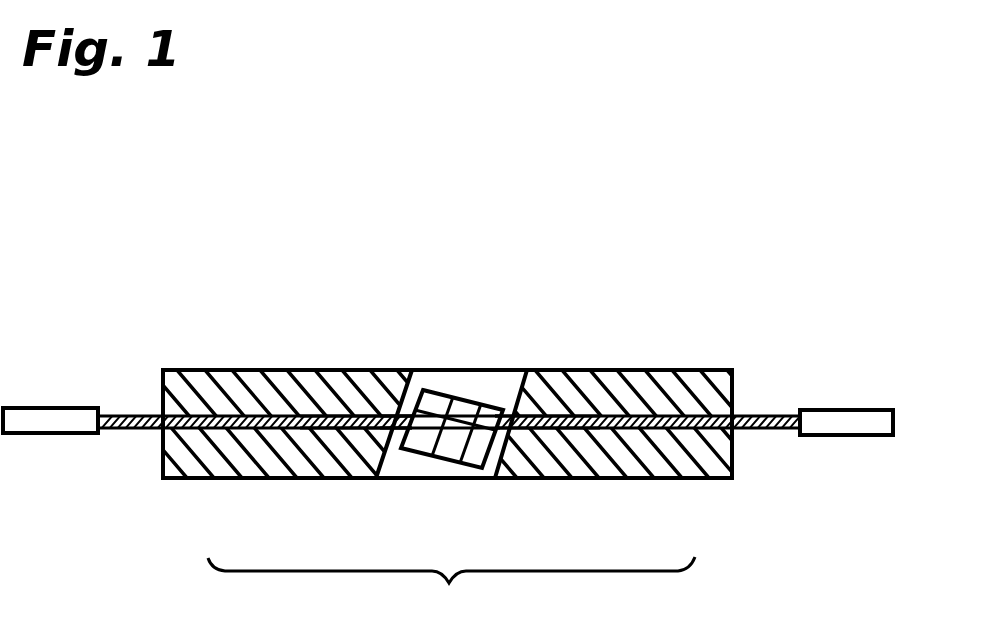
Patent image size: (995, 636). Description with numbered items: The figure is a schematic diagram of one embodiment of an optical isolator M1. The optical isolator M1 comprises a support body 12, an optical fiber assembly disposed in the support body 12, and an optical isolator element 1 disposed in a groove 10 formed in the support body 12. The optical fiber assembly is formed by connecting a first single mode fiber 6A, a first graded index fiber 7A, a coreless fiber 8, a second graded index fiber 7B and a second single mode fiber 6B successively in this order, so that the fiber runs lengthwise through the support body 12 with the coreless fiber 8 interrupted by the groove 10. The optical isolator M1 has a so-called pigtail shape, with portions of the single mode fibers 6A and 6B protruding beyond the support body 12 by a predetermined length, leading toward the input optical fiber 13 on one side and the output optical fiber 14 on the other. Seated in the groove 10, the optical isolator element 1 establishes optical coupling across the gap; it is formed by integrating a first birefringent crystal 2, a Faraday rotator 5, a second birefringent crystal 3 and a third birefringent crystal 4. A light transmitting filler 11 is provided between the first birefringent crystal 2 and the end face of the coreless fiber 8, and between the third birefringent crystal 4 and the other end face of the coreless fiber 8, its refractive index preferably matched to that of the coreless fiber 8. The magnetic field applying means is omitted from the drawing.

The optical isolator M1 is at (685, 272).
The optical isolator element 1 is at (473, 341).
The first birefringent crystal 2 is at (440, 380).
The second birefringent crystal 3 is at (475, 400).
The third birefringent crystal 4 is at (500, 367).
The Faraday rotator 5 is at (460, 392).
The first single mode fiber 6A is at (270, 428).
The second single mode fiber 6B is at (672, 430).
The first graded index fiber 7A is at (338, 430).
The second graded index fiber 7B is at (573, 430).
The coreless fiber 8 is at (388, 432).
The groove 10 is at (545, 385).
The light transmitting filler 11 is at (395, 383).
The support body 12 is at (252, 382).
The input optical fiber 13 is at (60, 425).
The output optical fiber 14 is at (865, 427).